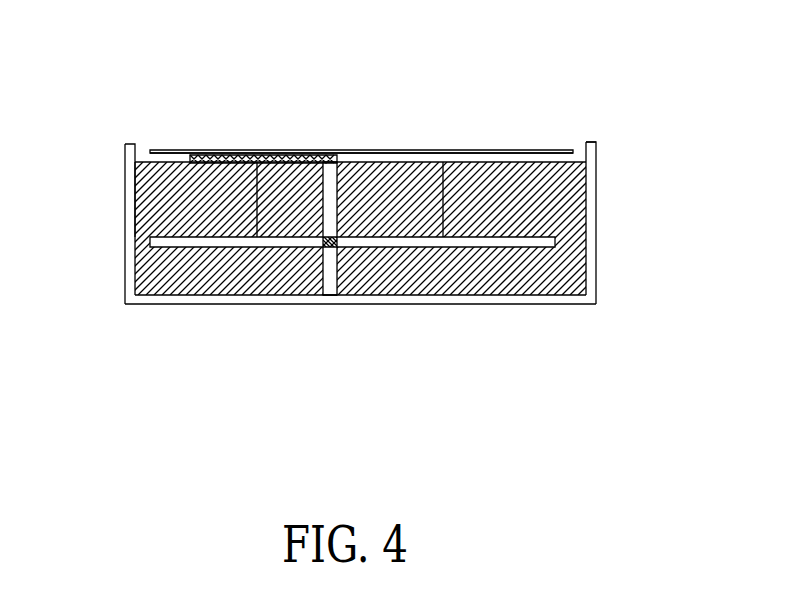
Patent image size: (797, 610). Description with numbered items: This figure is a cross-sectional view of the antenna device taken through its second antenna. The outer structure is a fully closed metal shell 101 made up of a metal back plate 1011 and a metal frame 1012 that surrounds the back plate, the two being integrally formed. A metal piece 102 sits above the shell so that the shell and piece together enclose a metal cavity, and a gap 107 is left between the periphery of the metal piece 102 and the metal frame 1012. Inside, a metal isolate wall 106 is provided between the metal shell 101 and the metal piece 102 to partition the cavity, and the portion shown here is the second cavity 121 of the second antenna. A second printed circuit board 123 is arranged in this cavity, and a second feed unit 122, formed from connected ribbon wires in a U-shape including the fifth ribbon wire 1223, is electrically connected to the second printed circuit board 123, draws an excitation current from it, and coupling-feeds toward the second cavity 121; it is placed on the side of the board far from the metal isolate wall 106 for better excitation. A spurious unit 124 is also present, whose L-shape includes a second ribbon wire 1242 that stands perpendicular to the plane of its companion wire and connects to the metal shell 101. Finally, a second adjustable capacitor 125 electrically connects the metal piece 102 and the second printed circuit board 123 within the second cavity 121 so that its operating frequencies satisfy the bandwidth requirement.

The metal shell 101 is at (417, 239).
The metal back plate 1011 is at (560, 284).
The metal frame 1012 is at (125, 273).
The metal piece 102 is at (523, 157).
The metal isolate wall 106 is at (464, 172).
The gap 107 is at (586, 143).
The second cavity 121 is at (527, 40).
The second feed unit 122 is at (254, 185).
The second printed circuit board 123 is at (150, 247).
The spurious unit 124 is at (336, 263).
The second ribbon wire 1242 is at (332, 268).
The second adjustable capacitor 125 is at (443, 190).
The fifth ribbon wire 1223 is at (286, 164).